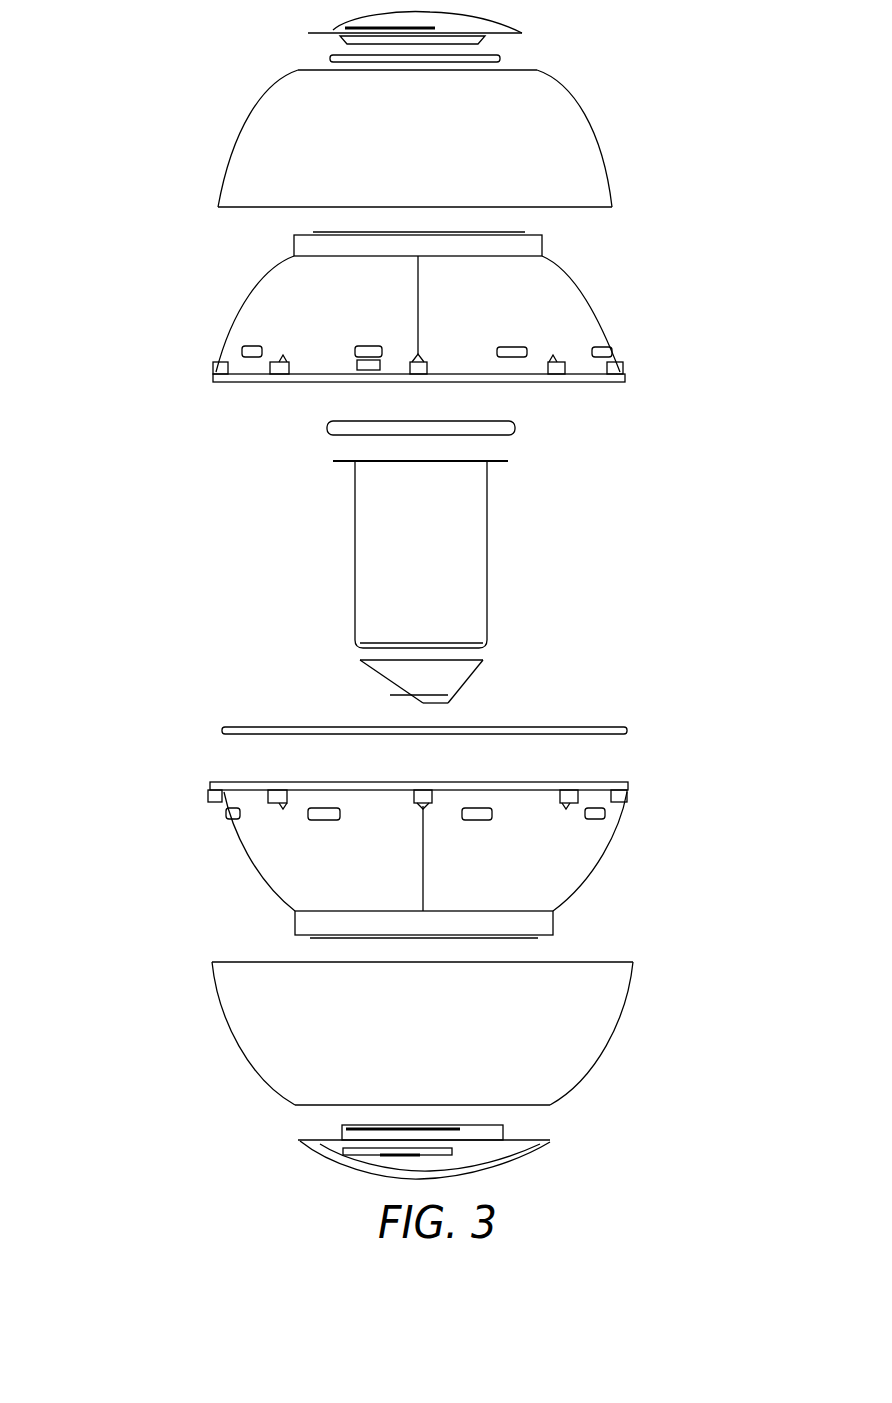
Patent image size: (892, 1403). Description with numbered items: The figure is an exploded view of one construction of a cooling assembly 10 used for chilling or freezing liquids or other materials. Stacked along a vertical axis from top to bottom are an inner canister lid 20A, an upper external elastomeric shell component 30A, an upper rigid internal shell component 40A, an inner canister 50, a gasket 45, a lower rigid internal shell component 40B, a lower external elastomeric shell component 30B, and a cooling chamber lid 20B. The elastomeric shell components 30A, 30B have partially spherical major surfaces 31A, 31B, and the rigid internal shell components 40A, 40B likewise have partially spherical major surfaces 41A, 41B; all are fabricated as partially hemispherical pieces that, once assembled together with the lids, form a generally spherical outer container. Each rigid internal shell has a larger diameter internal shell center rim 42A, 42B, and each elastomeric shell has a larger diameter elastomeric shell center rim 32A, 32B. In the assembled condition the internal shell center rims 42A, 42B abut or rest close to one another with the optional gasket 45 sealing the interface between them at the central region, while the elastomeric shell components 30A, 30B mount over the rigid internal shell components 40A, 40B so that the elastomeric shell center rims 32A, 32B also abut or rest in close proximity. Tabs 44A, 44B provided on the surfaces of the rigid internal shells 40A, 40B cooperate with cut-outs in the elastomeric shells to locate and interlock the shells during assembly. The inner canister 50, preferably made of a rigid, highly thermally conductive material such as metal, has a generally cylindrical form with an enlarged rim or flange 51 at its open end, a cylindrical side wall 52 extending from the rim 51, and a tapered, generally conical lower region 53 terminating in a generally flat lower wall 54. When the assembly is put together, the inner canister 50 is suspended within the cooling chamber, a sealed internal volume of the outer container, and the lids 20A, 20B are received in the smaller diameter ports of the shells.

The cooling assembly 10 is at (118, 418).
The inner canister lid 20A is at (333, 30).
The external elastomeric shell component 30A is at (255, 108).
The partially spherical major surface 31A is at (255, 168).
The elastomeric shell center rim 32A is at (219, 207).
The rigid internal shell component 40A is at (578, 290).
The partially spherical major surface 41A is at (572, 330).
The internal shell center rim 42A is at (615, 378).
The tab 44A is at (240, 352).
The gasket 45 is at (627, 730).
The inner canister 50 is at (315, 550).
The enlarged rim 51 is at (508, 461).
The cylindrical side wall 52 is at (487, 580).
The tapered lower region 53 is at (465, 680).
The lower wall 54 is at (420, 702).
The cooling chamber lid 20B is at (350, 1158).
The external elastomeric shell component 30B is at (218, 1015).
The partially spherical major surface 31B is at (258, 1038).
The elastomeric shell center rim 32B is at (212, 962).
The rigid internal shell component 40B is at (612, 840).
The partially spherical major surface 41B is at (562, 860).
The internal shell center rim 42B is at (205, 788).
The tab 44B is at (225, 813).